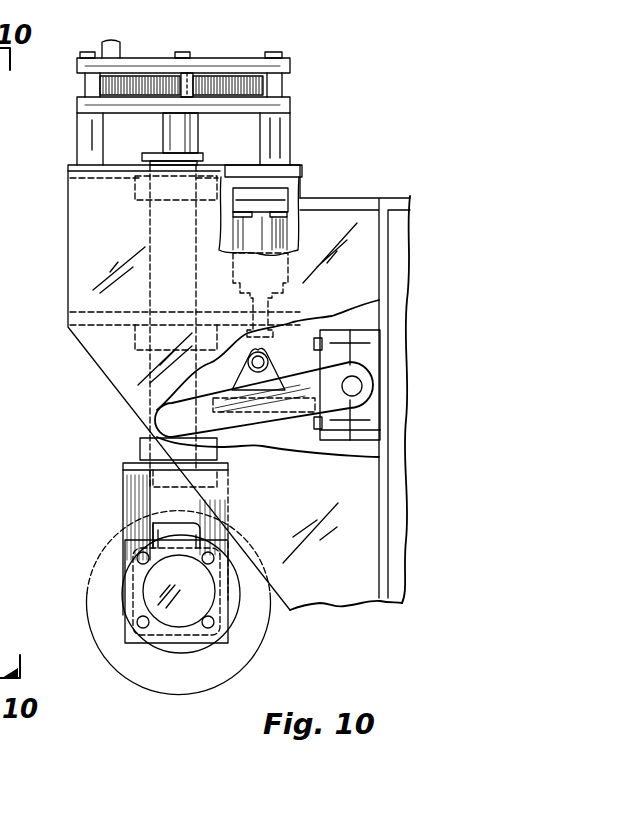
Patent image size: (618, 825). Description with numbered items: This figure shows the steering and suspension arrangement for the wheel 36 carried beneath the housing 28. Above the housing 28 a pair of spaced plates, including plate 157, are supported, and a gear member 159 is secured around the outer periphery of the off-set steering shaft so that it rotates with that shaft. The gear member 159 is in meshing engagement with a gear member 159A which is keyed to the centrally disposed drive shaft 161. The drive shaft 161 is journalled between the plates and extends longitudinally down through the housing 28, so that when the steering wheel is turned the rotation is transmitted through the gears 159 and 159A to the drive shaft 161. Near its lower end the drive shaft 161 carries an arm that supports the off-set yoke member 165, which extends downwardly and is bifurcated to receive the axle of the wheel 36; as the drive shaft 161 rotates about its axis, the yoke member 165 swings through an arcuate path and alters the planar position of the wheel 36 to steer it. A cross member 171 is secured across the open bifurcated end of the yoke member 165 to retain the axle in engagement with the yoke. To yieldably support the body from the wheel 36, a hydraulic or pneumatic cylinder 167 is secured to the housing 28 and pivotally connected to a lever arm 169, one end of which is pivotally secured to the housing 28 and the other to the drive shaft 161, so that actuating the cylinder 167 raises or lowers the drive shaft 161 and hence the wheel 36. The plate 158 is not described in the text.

The housing 28 is at (85, 266).
The wheel 36 is at (138, 663).
The plate 157 is at (280, 105).
The upper plate 158 is at (280, 64).
The gear member 159 is at (100, 86).
The gear member 159A is at (137, 87).
The drive shaft 161 is at (190, 143).
The yoke member 165 is at (132, 497).
The hydraulic or pneumatic cylinder 167 is at (268, 234).
The lever arm 169 is at (293, 417).
The cross member 171 is at (183, 637).